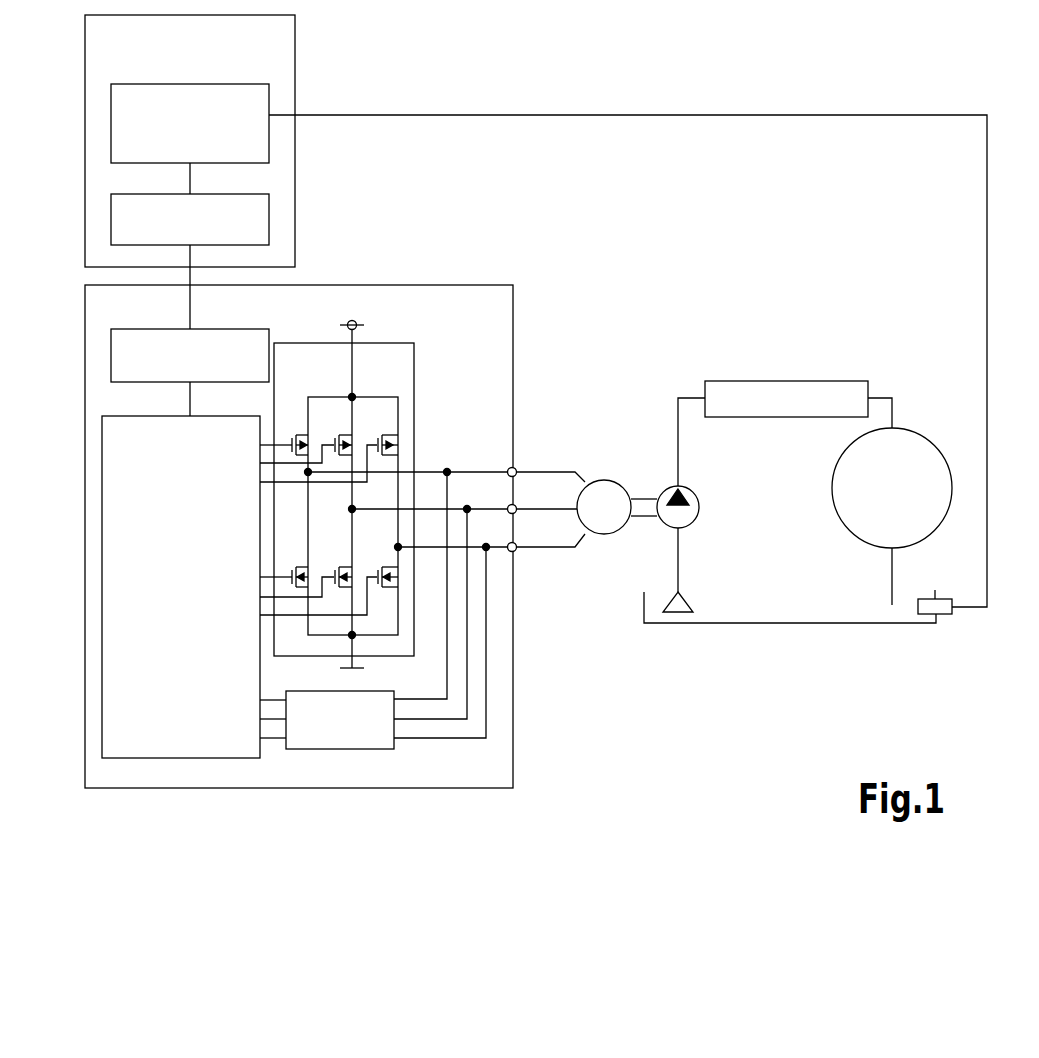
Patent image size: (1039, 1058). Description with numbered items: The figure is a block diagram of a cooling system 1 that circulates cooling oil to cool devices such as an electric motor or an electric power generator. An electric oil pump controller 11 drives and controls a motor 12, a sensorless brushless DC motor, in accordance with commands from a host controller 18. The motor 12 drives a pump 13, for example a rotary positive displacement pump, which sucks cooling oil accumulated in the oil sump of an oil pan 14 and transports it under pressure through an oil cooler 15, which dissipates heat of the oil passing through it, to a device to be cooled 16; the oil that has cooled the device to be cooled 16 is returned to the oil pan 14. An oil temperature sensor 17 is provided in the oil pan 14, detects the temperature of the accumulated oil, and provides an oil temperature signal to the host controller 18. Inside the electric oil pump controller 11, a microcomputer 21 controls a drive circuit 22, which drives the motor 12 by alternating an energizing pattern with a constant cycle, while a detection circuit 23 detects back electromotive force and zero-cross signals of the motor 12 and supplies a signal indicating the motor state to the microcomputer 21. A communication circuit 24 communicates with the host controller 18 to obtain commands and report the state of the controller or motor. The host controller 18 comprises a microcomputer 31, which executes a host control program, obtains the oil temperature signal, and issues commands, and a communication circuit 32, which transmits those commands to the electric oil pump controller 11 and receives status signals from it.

The cooling system 1 is at (556, 816).
The electric oil pump controller 11 is at (487, 285).
The motor 12 is at (618, 483).
The pump 13 is at (697, 493).
The oil pan 14 is at (787, 624).
The oil cooler 15 is at (822, 381).
The device to be cooled 16 is at (918, 435).
The oil temperature sensor 17 is at (942, 599).
The host controller 18 is at (295, 68).
The microcomputer 21 is at (218, 416).
The drive circuit 22 is at (386, 343).
The detection circuit 23 is at (365, 691).
The communication circuit 24 is at (148, 329).
The microcomputer 31 is at (232, 84).
The communication circuit 32 is at (232, 194).